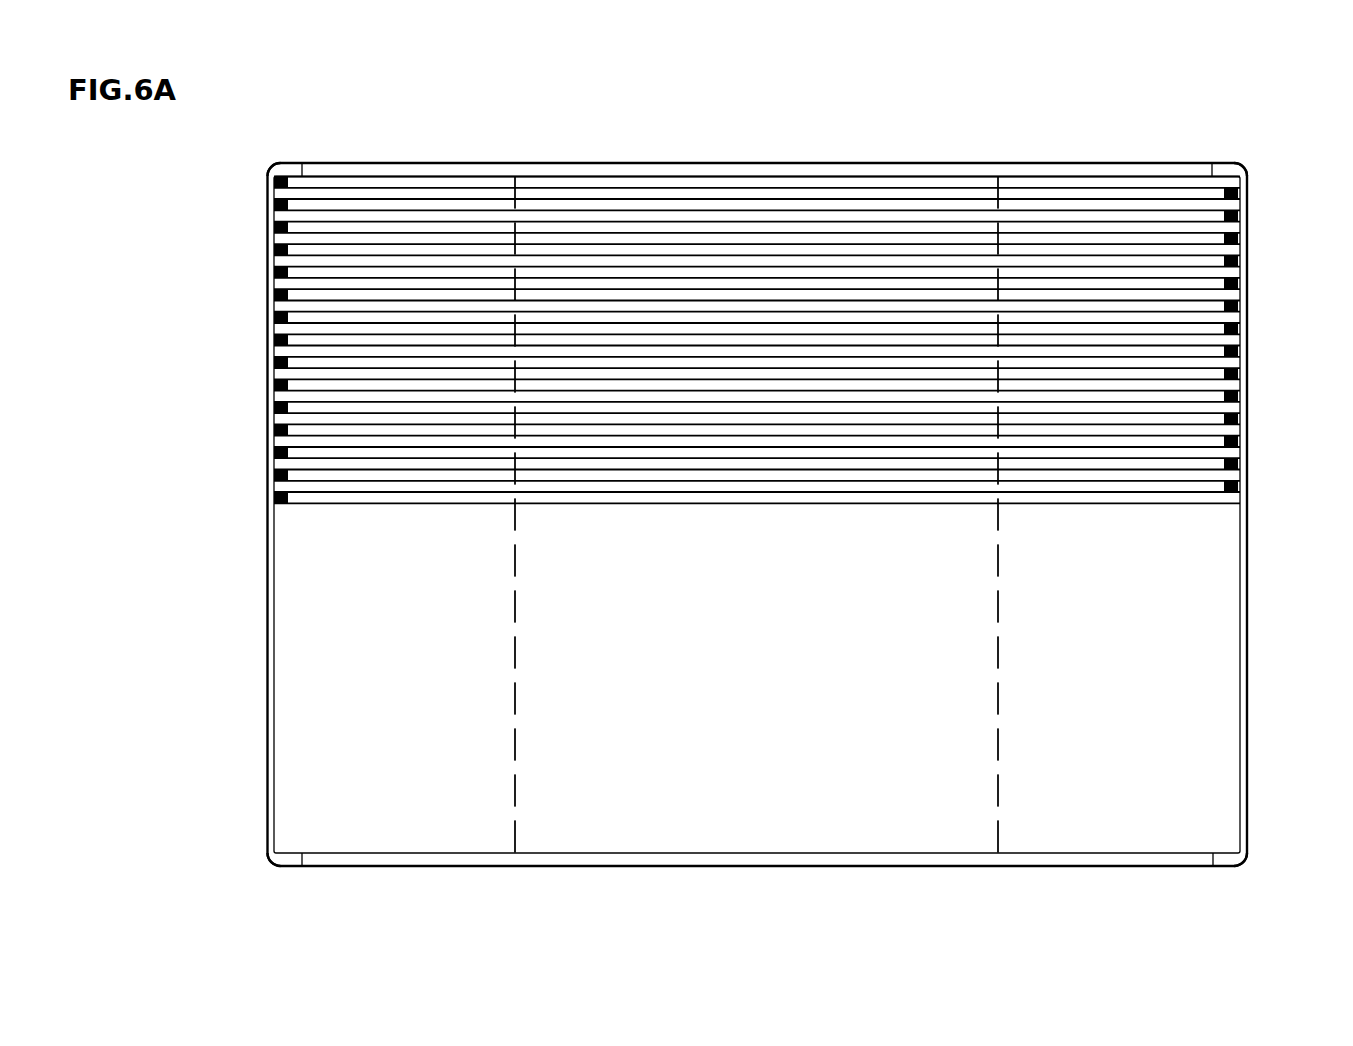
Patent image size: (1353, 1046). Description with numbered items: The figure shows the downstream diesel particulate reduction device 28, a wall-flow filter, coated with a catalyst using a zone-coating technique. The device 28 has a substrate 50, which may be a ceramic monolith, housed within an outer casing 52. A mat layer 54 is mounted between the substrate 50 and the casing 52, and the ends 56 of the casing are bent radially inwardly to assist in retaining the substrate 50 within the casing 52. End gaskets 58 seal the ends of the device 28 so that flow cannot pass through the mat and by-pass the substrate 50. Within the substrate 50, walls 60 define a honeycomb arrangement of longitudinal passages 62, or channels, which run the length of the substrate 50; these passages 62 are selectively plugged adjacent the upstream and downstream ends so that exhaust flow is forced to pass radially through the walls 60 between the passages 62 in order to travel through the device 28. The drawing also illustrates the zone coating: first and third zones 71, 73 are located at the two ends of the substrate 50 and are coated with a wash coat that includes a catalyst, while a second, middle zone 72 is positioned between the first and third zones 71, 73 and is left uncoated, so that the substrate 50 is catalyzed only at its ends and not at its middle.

The downstream diesel particulate reduction device 28 is at (838, 145).
The substrate 50 is at (792, 299).
The outer casing 52 is at (971, 163).
The mat layer 54 is at (497, 175).
The ends of the casing 56 is at (268, 172).
The end gaskets 58 is at (288, 172).
The walls 60 is at (655, 200).
The longitudinal passages 62 is at (597, 207).
The first zone 71 is at (398, 497).
The second, middle zone 72 is at (713, 495).
The third zone 73 is at (1080, 497).